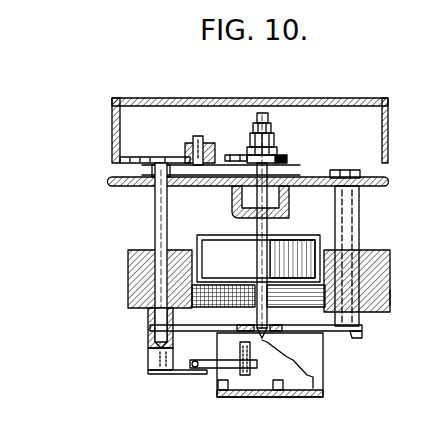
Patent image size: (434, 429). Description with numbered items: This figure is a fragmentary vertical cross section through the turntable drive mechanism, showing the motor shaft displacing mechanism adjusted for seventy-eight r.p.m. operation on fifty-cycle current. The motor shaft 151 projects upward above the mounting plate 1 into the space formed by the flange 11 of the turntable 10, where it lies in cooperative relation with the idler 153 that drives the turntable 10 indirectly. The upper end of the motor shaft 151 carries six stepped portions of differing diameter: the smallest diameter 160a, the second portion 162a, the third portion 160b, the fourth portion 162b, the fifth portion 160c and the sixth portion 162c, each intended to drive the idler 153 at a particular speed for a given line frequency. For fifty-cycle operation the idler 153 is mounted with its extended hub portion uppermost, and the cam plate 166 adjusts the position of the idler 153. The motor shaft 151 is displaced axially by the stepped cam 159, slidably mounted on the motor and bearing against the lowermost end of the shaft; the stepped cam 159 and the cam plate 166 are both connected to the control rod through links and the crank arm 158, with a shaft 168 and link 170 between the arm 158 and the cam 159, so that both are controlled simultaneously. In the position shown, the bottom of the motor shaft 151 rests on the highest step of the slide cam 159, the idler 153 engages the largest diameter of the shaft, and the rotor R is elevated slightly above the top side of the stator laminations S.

The turntable 10 is at (176, 98).
The flange 11 is at (112, 113).
The cam plate 166 is at (142, 167).
The mounting plate 1 is at (382, 188).
The smallest diameter portion 160a is at (265, 118).
The second portion 162a is at (271, 129).
The third portion 160b is at (251, 137).
The fourth portion 162b is at (224, 146).
The fifth portion 160c is at (276, 151).
The sixth portion 162c is at (280, 160).
The motor shaft 151 is at (283, 223).
The rotor R is at (258, 271).
The idler 153 is at (370, 251).
The stator laminations S is at (392, 297).
The shaft 168 is at (150, 317).
The crank arm 158 is at (176, 375).
The stepped cam 159 is at (298, 372).
The link 170 is at (226, 368).